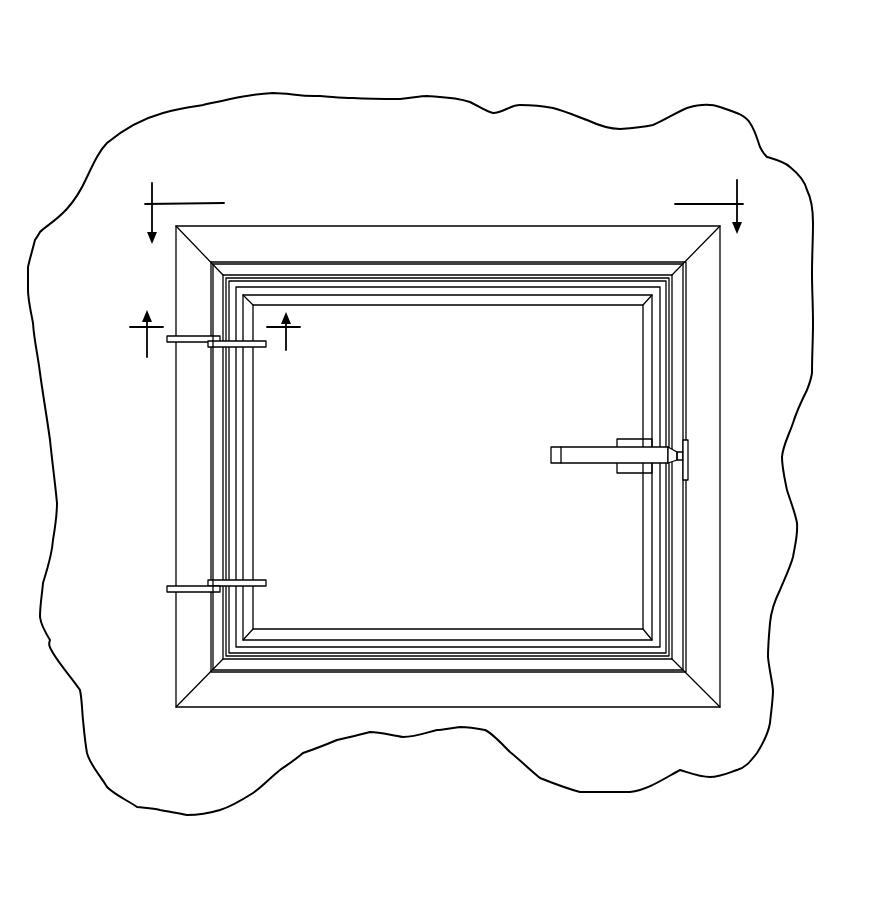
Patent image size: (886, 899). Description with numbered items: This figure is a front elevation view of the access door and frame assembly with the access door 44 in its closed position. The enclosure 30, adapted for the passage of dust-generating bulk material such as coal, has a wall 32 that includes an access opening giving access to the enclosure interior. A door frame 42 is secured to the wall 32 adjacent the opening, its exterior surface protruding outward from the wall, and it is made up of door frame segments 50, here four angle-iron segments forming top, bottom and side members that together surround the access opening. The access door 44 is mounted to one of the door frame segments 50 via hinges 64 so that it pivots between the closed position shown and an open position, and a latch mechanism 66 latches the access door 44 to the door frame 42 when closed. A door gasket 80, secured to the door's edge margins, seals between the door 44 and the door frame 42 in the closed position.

The enclosure 30 is at (172, 104).
The wall 32 is at (275, 92).
The door frame 42 is at (441, 458).
The access door 44 is at (331, 607).
The door frame segments 50 is at (550, 240).
The hinges 64 is at (195, 343).
The latch mechanism 66 is at (690, 448).
The door gasket 80 is at (680, 335).